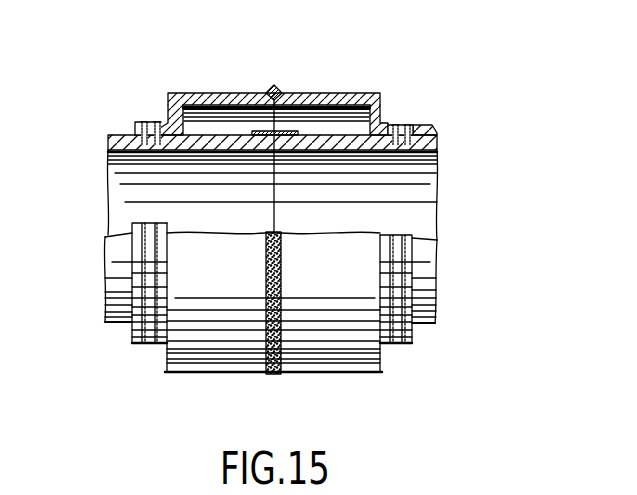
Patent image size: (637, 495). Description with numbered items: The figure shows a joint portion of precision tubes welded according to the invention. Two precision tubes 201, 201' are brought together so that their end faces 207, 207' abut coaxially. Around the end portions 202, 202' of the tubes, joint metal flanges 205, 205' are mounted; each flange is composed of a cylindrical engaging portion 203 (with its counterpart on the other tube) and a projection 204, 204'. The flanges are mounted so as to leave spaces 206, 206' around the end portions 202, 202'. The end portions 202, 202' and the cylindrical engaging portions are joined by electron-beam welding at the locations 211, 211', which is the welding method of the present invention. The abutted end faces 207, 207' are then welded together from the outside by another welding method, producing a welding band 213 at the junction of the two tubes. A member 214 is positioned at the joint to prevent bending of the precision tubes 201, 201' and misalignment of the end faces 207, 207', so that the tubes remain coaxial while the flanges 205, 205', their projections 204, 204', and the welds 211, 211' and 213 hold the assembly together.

The precision tube 201 is at (249, 176).
The precision tube 201' is at (458, 133).
The end portion 202 is at (225, 100).
The end portion 202' is at (346, 90).
The cylindrical engaging portion 203 is at (132, 128).
The projection 204 is at (160, 92).
The projection 204' is at (408, 95).
The joint metal flange 205 is at (227, 61).
The joint metal flange 205' is at (327, 64).
The space 206 is at (229, 83).
The space 206' is at (325, 91).
The end face 207 is at (249, 191).
The end face 207' is at (305, 207).
The electron-beam weld 211 is at (129, 102).
The electron-beam weld 211' is at (424, 118).
The welding band 213 is at (277, 86).
The member 214 is at (291, 131).